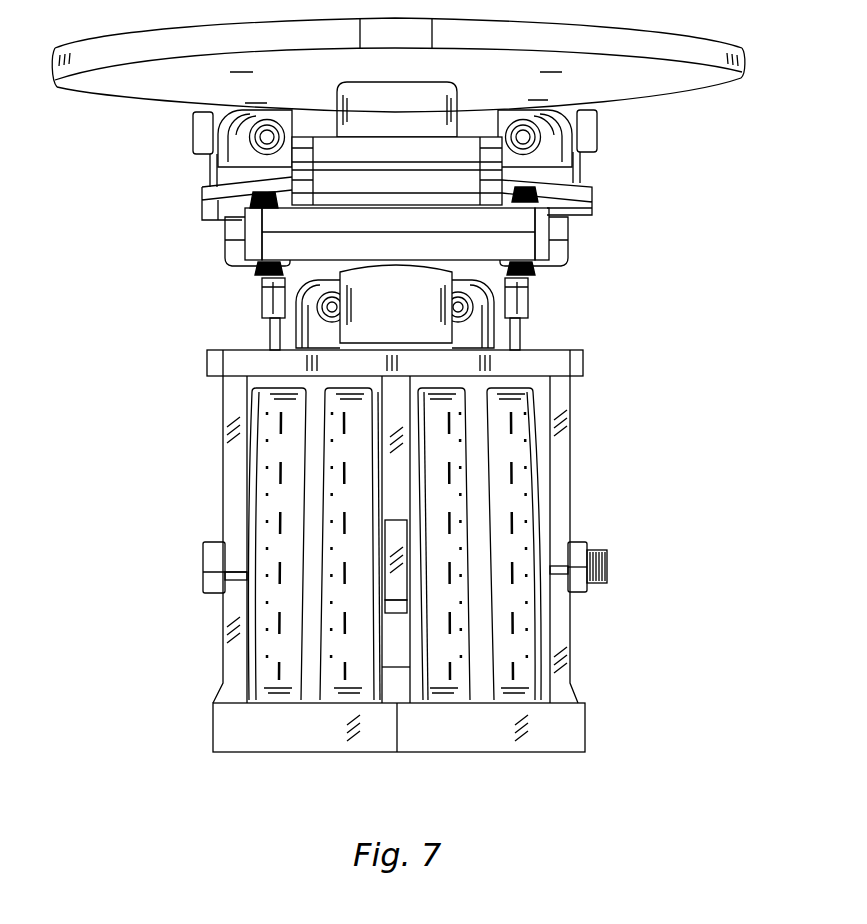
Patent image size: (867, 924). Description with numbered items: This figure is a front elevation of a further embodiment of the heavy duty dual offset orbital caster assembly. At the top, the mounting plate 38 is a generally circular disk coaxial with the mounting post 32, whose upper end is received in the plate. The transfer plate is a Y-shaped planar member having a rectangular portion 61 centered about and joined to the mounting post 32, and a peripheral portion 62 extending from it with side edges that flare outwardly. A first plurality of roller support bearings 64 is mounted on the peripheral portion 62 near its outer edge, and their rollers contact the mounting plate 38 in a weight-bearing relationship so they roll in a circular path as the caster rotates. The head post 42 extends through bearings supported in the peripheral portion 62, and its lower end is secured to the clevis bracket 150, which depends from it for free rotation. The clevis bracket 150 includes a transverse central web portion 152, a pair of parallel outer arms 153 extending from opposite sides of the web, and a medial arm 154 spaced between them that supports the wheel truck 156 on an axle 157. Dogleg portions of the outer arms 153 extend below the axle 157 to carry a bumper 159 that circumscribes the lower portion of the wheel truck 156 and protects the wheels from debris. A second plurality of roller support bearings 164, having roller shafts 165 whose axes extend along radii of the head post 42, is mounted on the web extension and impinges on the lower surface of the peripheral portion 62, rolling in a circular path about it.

The mounting plate 38 is at (316, 84).
The mounting post 32 is at (413, 121).
The roller support bearings 64 is at (603, 166).
The rectangular portion 61 is at (608, 202).
The peripheral portion 62 is at (512, 238).
The roller shafts 165 is at (258, 283).
The roller support bearings 164 is at (533, 312).
The head post 42 is at (407, 312).
The clevis bracket 150 is at (195, 355).
The central web portion 152 is at (242, 364).
The outer arms 153 is at (227, 465).
The medial arm 154 is at (400, 493).
The wheel truck 156 is at (512, 614).
The axle 157 is at (205, 563).
The bumper 159 is at (240, 730).